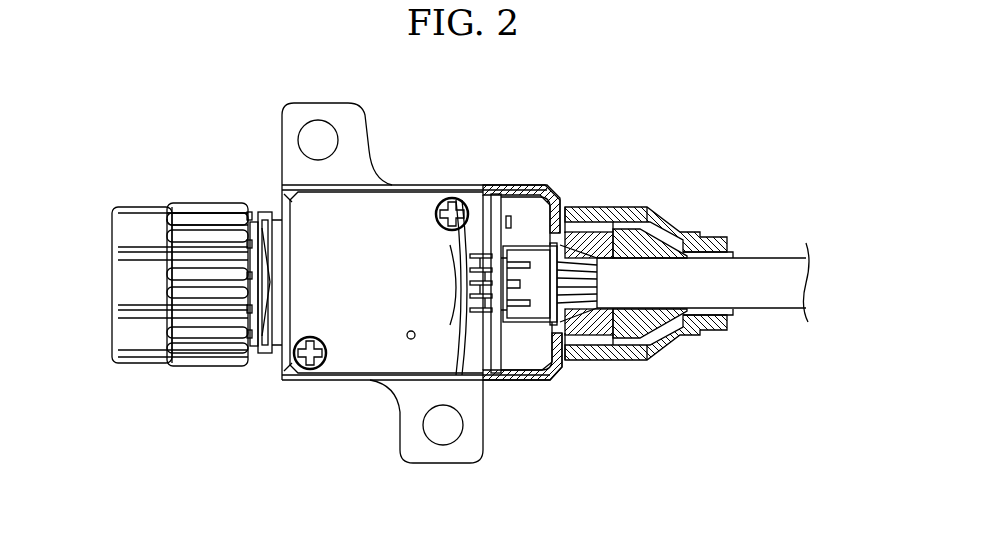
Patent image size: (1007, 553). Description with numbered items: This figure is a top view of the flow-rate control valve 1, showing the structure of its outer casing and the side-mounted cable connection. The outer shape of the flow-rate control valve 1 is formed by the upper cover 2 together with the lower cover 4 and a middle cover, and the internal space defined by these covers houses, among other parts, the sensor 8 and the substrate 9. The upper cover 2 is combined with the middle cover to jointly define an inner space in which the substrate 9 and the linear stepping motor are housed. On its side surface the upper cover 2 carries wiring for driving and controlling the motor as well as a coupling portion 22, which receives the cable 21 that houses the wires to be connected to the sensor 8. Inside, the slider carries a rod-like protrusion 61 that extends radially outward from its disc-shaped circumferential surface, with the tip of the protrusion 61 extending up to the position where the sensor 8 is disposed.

The flow-rate control valve 1 is at (97, 62).
The upper cover 2 is at (413, 198).
The lower cover 4 is at (450, 455).
The sensor 8 is at (465, 300).
The protrusion 61 is at (465, 272).
The substrate 9 is at (502, 210).
The cable 21 is at (772, 258).
The coupling portion 22 is at (624, 207).